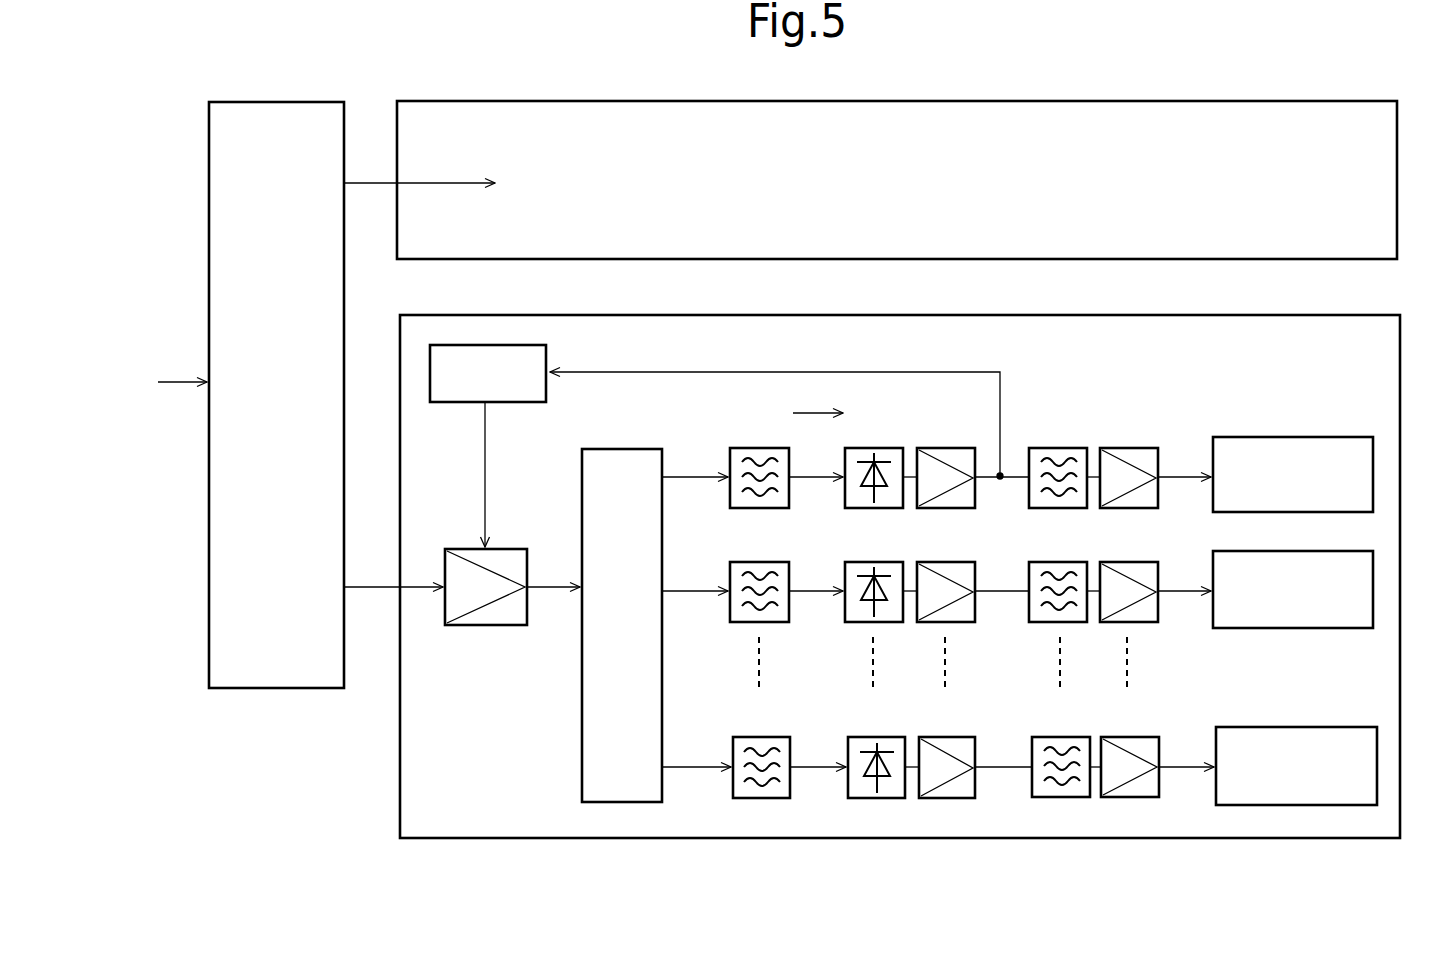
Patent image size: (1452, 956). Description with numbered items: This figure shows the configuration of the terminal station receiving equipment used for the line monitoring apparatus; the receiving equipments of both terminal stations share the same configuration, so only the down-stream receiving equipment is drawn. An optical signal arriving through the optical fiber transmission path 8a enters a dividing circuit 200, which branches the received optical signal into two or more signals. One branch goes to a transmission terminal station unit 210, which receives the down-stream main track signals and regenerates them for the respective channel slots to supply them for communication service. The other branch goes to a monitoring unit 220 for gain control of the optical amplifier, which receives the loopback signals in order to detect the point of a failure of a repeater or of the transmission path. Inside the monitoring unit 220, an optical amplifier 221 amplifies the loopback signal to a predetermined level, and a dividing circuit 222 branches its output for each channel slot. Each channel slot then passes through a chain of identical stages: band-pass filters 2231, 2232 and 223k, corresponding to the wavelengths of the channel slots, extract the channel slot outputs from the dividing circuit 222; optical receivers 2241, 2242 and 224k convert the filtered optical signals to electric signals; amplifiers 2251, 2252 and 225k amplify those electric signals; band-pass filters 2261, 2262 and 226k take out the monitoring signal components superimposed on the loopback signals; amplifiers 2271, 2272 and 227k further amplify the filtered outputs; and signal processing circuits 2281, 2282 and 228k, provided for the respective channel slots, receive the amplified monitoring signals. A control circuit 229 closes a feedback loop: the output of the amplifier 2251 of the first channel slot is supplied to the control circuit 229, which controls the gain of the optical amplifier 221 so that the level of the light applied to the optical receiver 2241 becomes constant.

The optical fiber transmission path 8a is at (187, 380).
The dividing circuit 200 is at (283, 690).
The transmission terminal station unit 210 is at (575, 260).
The monitoring unit 220 is at (792, 313).
The optical amplifier 221 is at (484, 626).
The dividing circuit 222 is at (622, 447).
The control circuit 229 is at (548, 358).
The band-pass filter 2231 is at (742, 449).
The band-pass filter 2232 is at (744, 562).
The band-pass filter 223k is at (744, 737).
The optical receiver 2241 is at (858, 448).
The optical receiver 2242 is at (858, 562).
The optical receiver 224k is at (861, 737).
The amplifier 2251 is at (937, 448).
The amplifier 2252 is at (937, 562).
The amplifier 225k is at (940, 737).
The band-pass filter 2261 is at (1044, 448).
The band-pass filter 2262 is at (1044, 562).
The band-pass filter 226k is at (1047, 737).
The amplifier 2271 is at (1118, 448).
The amplifier 2272 is at (1118, 562).
The amplifier 227k is at (1122, 737).
The signal processing circuit 2281 is at (1283, 437).
The signal processing circuit 2282 is at (1283, 551).
The signal processing circuit 228k is at (1286, 727).